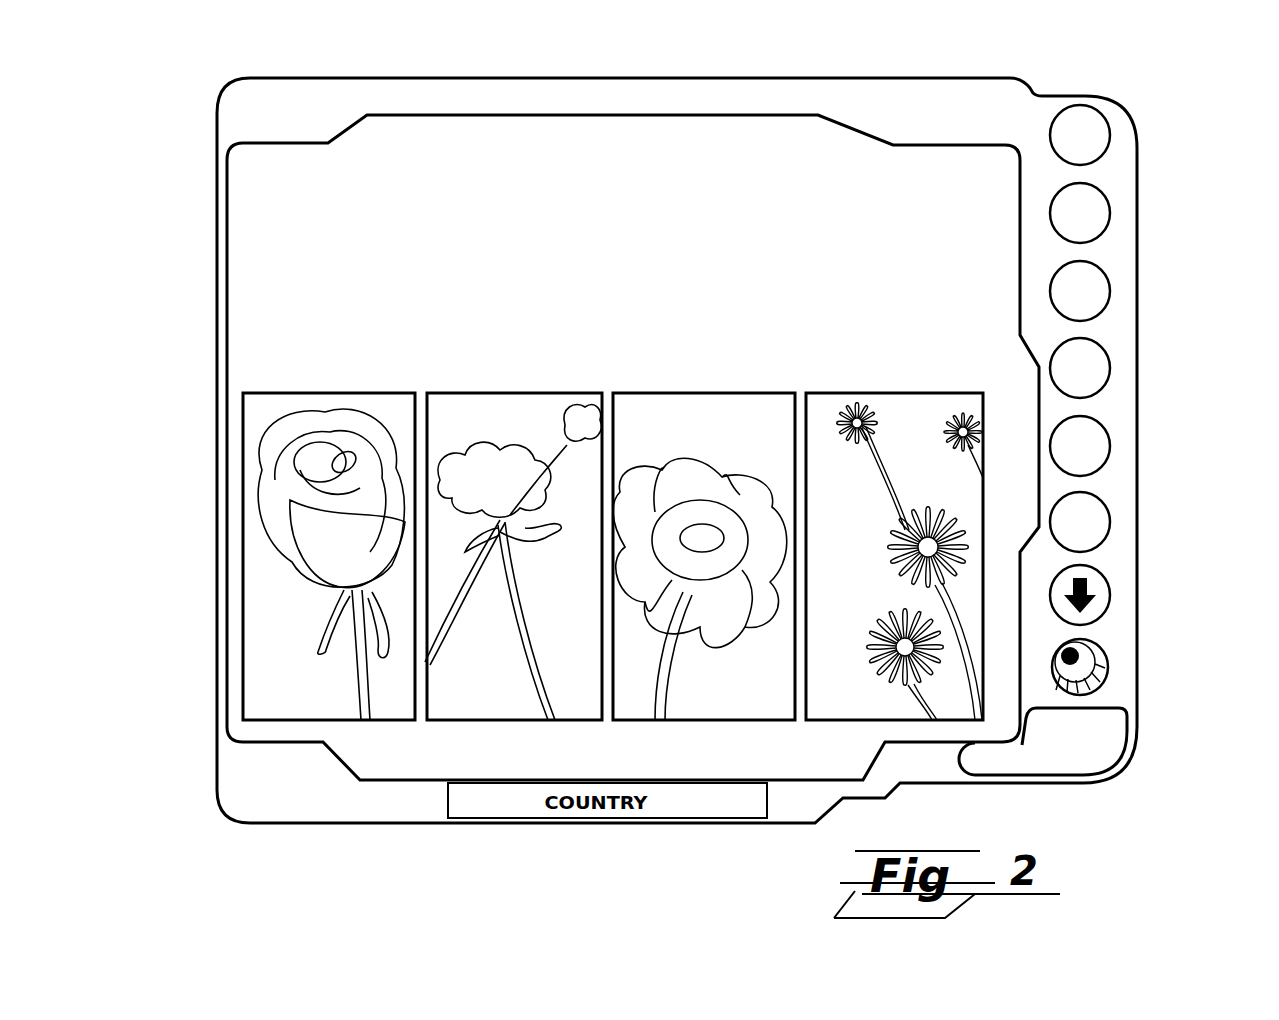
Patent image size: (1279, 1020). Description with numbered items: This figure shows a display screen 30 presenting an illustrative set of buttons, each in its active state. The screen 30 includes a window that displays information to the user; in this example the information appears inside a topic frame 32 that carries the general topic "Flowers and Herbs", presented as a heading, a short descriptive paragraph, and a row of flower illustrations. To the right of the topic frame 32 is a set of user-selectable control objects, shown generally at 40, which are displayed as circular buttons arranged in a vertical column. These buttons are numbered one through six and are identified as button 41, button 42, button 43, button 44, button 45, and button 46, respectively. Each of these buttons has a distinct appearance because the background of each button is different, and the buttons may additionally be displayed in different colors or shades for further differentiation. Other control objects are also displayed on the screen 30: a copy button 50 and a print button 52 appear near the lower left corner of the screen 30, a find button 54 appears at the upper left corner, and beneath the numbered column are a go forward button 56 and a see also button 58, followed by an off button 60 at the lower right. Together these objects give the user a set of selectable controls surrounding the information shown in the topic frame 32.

The screen 30 is at (548, 52).
The topic frame 32 is at (710, 165).
The set of user-selectable control objects 40 is at (1153, 375).
The button 1 41 is at (1110, 138).
The button 2 42 is at (1110, 212).
The button 3 43 is at (1110, 283).
The button 4 44 is at (1110, 355).
The button 5 45 is at (1110, 450).
The button 6 46 is at (1110, 527).
The copy button 50 is at (228, 772).
The print button 52 is at (244, 803).
The find button 54 is at (262, 78).
The go forward button 56 is at (1110, 592).
The see also button 58 is at (1110, 678).
The off button 60 is at (1122, 758).